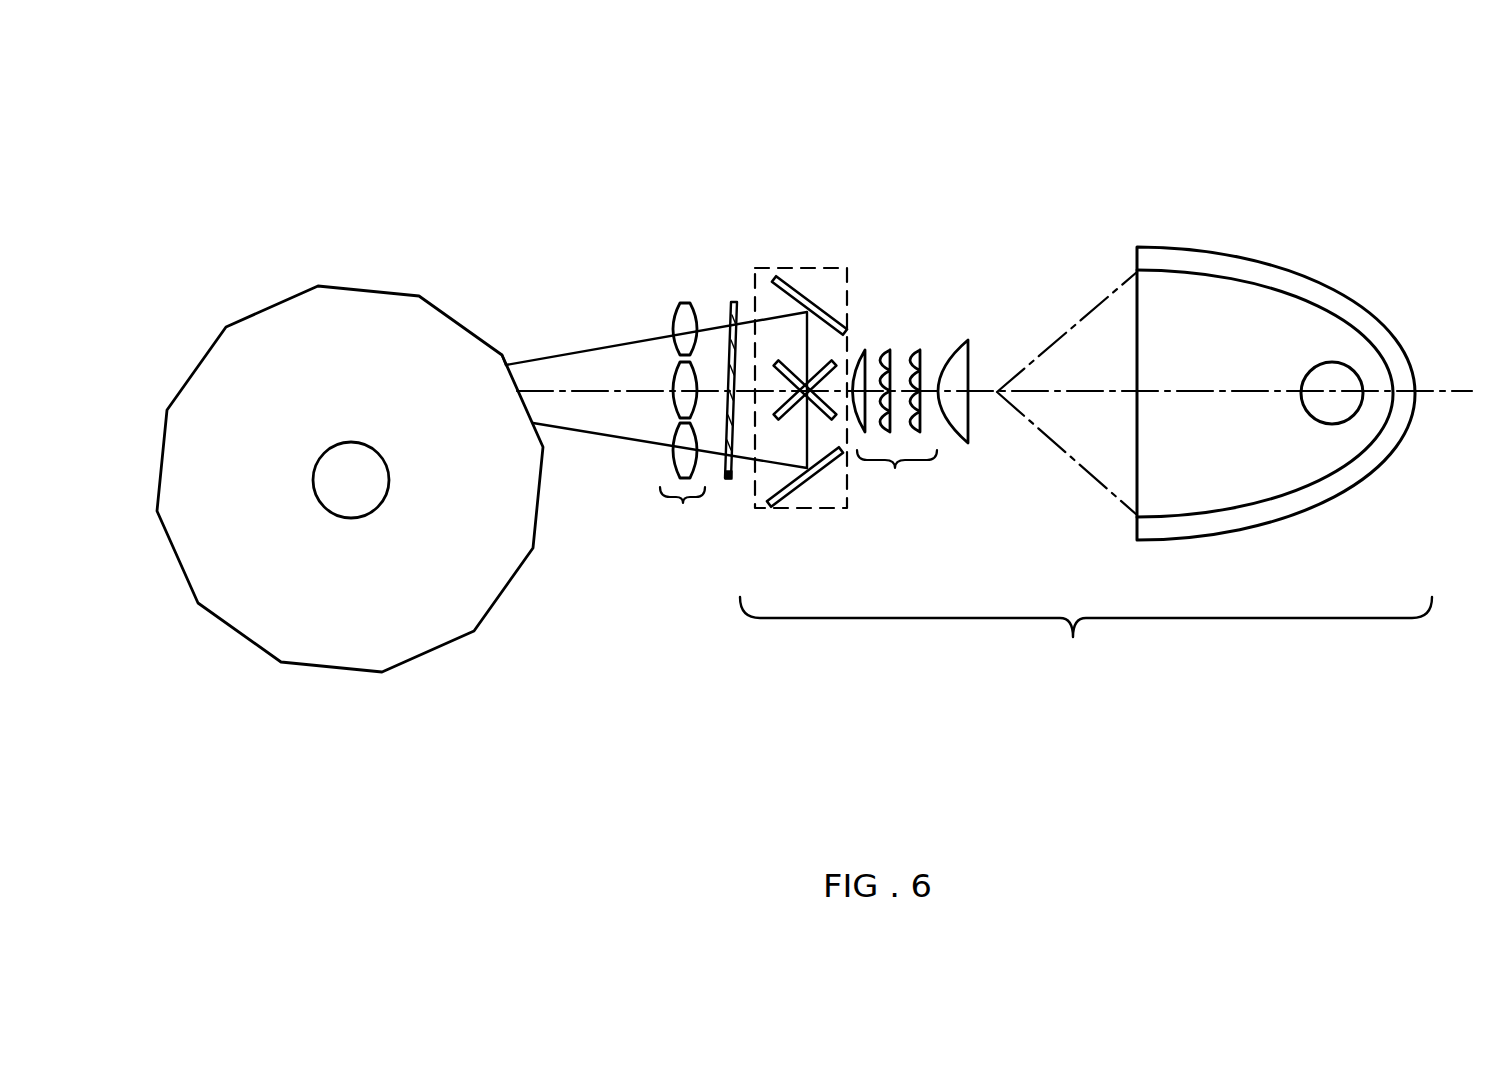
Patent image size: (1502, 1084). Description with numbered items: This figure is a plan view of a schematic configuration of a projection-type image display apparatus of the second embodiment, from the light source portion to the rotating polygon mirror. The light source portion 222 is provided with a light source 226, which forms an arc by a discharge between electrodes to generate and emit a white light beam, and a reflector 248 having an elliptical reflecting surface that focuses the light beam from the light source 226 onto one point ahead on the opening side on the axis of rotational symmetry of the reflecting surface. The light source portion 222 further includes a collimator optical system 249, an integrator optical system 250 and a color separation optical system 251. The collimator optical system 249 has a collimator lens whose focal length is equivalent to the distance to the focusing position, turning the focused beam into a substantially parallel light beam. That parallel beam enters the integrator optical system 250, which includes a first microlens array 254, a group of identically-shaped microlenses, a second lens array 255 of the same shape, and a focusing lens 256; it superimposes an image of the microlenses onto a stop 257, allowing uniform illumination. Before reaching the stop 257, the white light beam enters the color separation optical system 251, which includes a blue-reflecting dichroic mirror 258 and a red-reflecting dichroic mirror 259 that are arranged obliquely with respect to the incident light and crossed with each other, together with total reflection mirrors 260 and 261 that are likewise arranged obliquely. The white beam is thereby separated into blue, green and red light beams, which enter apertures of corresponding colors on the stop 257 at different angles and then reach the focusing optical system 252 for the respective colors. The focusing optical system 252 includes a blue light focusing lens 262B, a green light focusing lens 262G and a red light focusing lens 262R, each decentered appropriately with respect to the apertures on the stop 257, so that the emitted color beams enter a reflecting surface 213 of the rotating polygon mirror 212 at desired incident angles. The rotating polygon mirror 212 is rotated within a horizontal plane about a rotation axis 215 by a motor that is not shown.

The rotating polygon mirror 212 is at (452, 613).
The rotation axis 215 is at (352, 518).
The reflecting surface 213 is at (508, 371).
The blue light focusing lens 262B is at (673, 313).
The green light focusing lens 262G is at (668, 375).
The red light focusing lens 262R is at (670, 463).
The focusing optical system 252 is at (687, 517).
The stop 257 is at (733, 298).
The color separation optical system 251 is at (848, 278).
The total reflection mirror 260 is at (783, 275).
The total reflection mirror 261 is at (788, 508).
The red-reflecting dichroic mirror 259 is at (831, 355).
The blue-reflecting dichroic mirror 258 is at (831, 419).
The focusing lens 256 is at (862, 350).
The second lens array 255 is at (890, 350).
The first microlens array 254 is at (920, 350).
The integrator optical system 250 is at (897, 481).
The collimator optical system 249 is at (973, 423).
The reflector 248 is at (1230, 523).
The light source 226 is at (1343, 420).
The light source portion 222 is at (1086, 640).